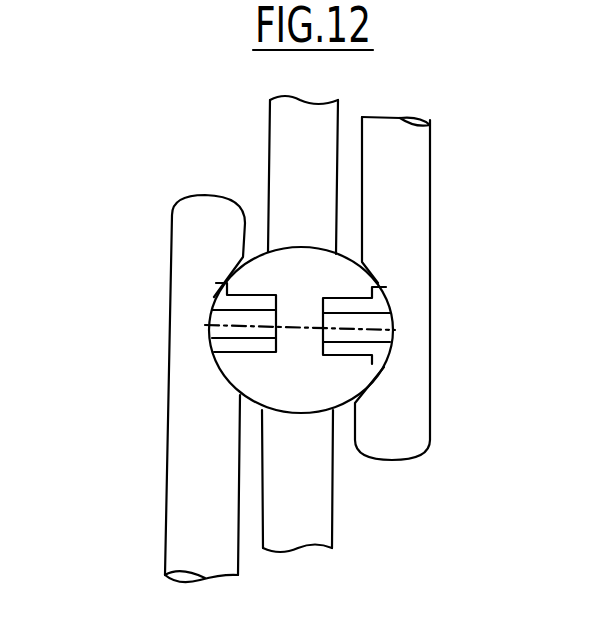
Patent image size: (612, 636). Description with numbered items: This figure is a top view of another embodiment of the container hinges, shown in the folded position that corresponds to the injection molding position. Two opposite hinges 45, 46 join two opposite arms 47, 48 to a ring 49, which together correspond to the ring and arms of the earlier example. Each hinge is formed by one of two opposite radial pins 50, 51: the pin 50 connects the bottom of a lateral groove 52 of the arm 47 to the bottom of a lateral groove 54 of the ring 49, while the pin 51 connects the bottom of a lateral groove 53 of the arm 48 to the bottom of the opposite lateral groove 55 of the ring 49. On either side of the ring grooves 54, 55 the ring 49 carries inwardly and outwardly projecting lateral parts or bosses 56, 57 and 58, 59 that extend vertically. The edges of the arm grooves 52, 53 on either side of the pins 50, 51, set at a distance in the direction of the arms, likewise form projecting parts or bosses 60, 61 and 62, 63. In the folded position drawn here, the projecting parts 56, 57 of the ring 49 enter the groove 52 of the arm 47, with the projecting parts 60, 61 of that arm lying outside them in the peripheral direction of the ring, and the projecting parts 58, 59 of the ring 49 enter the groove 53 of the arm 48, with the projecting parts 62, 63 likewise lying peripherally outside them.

The hinge 45 is at (164, 220).
The hinge 46 is at (438, 387).
The arm 47 is at (187, 513).
The arm 48 is at (403, 177).
The ring 49 is at (290, 137).
The radial pin 50 is at (225, 296).
The radial pin 51 is at (368, 322).
The lateral groove 52 is at (227, 387).
The lateral groove 53 is at (365, 410).
The lateral groove 54 is at (240, 345).
The lateral groove 55 is at (360, 350).
The projecting part 56 is at (250, 290).
The projecting part 57 is at (233, 384).
The projecting part 58 is at (367, 380).
The projecting part 59 is at (365, 287).
The projecting part 60 is at (232, 250).
The projecting part 61 is at (232, 402).
The projecting part 62 is at (360, 410).
The projecting part 63 is at (367, 253).